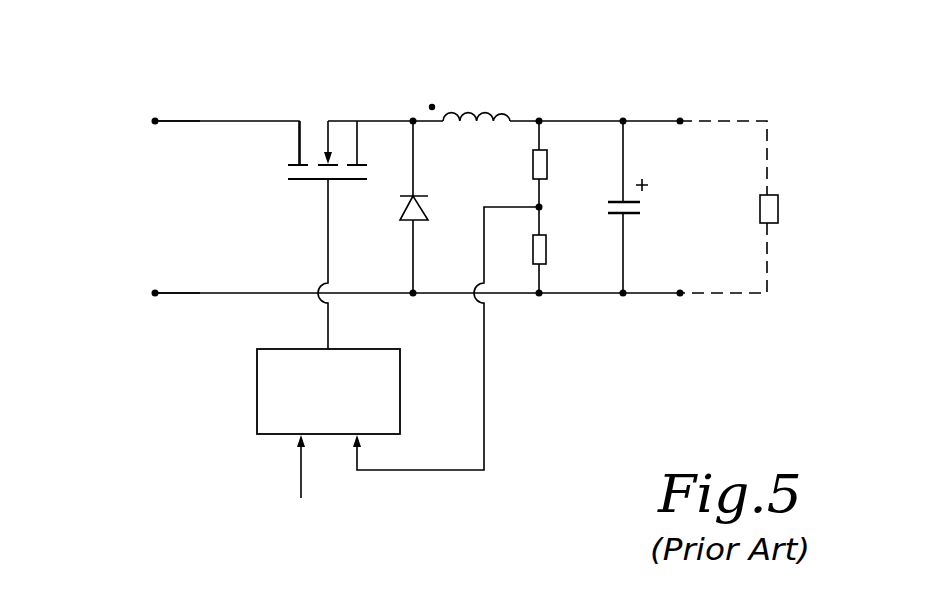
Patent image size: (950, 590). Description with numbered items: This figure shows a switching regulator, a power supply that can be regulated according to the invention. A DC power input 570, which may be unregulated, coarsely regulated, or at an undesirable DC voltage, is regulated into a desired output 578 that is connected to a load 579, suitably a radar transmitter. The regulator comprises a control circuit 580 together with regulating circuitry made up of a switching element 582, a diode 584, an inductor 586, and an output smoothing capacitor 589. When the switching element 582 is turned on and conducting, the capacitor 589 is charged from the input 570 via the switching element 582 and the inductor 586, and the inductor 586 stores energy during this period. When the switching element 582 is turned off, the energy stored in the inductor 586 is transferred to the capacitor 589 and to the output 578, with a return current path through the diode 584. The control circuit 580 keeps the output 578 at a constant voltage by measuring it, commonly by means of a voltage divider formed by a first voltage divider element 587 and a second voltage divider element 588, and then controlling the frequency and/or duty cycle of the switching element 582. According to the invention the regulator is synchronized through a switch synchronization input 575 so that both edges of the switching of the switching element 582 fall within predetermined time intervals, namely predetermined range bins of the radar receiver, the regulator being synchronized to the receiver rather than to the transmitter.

The power input 570 is at (155, 207).
The switch synchronization input 575 is at (300, 476).
The output 578 is at (680, 208).
The load 579 is at (779, 200).
The control circuit 580 is at (257, 383).
The switching element 582 is at (328, 137).
The diode 584 is at (407, 210).
The inductor 586 is at (482, 113).
The voltage divider element 587 is at (548, 162).
The voltage divider element 588 is at (546, 250).
The capacitor 589 is at (616, 200).